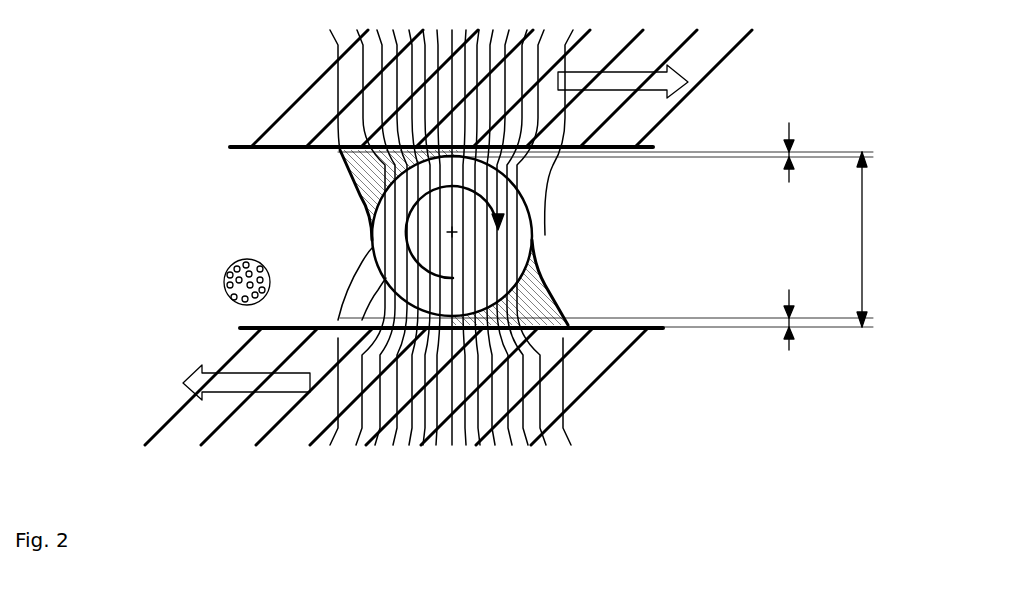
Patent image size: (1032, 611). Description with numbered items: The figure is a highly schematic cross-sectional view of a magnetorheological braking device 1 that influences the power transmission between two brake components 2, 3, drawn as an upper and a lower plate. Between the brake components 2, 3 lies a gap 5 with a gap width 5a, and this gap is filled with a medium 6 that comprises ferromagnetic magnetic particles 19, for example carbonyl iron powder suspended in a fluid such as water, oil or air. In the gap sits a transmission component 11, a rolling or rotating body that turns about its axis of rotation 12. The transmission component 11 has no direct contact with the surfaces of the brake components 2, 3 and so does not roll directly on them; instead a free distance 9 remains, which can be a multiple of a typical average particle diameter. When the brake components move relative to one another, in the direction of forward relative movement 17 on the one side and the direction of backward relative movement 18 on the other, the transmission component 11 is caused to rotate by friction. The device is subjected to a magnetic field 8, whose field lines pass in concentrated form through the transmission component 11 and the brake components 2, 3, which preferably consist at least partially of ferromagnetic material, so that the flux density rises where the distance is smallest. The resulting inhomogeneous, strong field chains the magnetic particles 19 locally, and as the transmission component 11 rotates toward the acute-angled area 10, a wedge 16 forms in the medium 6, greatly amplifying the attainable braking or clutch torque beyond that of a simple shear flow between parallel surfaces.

The magnetorheological braking device 1 is at (191, 97).
The brake component 2 is at (615, 363).
The brake component 3 is at (675, 105).
The gap 5 is at (247, 198).
The gap width 5a is at (865, 202).
The medium 6 is at (222, 263).
The magnetic field 8 is at (343, 80).
The free distance 9 is at (793, 153).
The acute-angled area 10 is at (342, 167).
The transmission component 11 is at (375, 239).
The axis of rotation 12 is at (452, 233).
The wedge 16 is at (372, 170).
The direction of forward relative movement 17 is at (685, 75).
The direction of backward relative movement 18 is at (233, 380).
The magnetic particles 19 is at (227, 283).